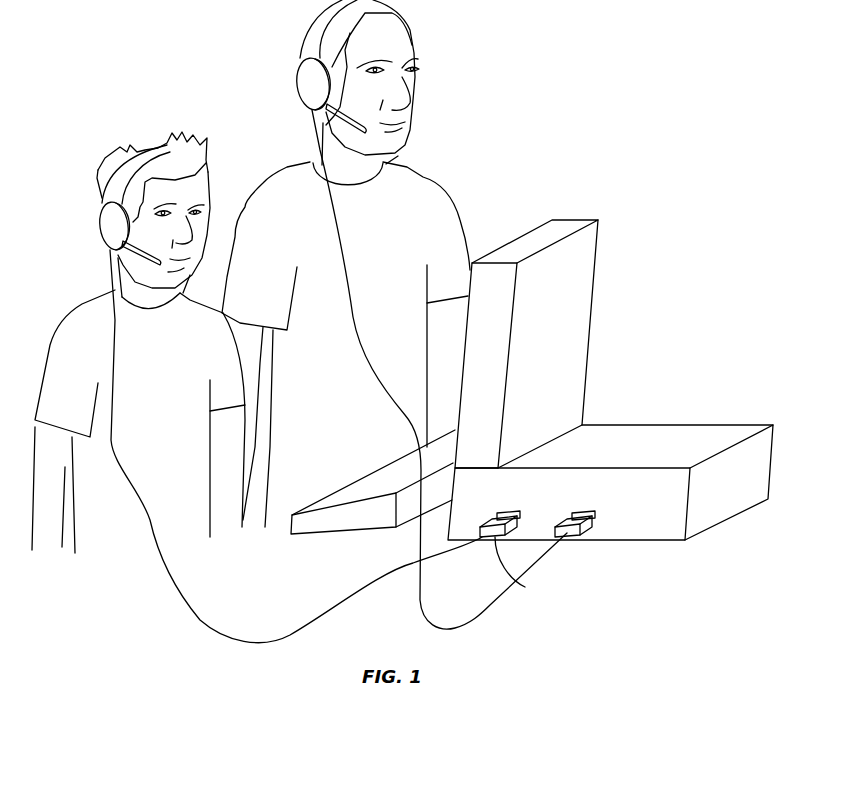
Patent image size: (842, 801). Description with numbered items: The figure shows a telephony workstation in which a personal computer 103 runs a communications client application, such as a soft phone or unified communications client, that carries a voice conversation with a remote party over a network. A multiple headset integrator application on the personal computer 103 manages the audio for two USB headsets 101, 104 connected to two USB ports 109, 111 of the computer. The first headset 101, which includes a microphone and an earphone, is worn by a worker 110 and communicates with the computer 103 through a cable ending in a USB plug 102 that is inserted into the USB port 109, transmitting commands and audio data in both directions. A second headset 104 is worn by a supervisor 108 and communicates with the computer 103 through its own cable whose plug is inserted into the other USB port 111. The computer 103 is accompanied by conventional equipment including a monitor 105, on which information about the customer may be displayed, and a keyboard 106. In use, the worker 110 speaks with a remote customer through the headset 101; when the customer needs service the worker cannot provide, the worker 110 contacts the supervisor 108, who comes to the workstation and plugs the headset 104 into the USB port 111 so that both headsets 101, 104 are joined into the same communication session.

The USB headset 101 is at (99, 222).
The USB plug 102 is at (525, 587).
The personal computer 103 is at (728, 504).
The USB headset 104 is at (294, 83).
The monitor 105 is at (592, 322).
The keyboard 106 is at (342, 535).
The supervisor 108 is at (423, 175).
The USB port 109 is at (508, 512).
The worker 110 is at (80, 306).
The USB port 111 is at (585, 512).